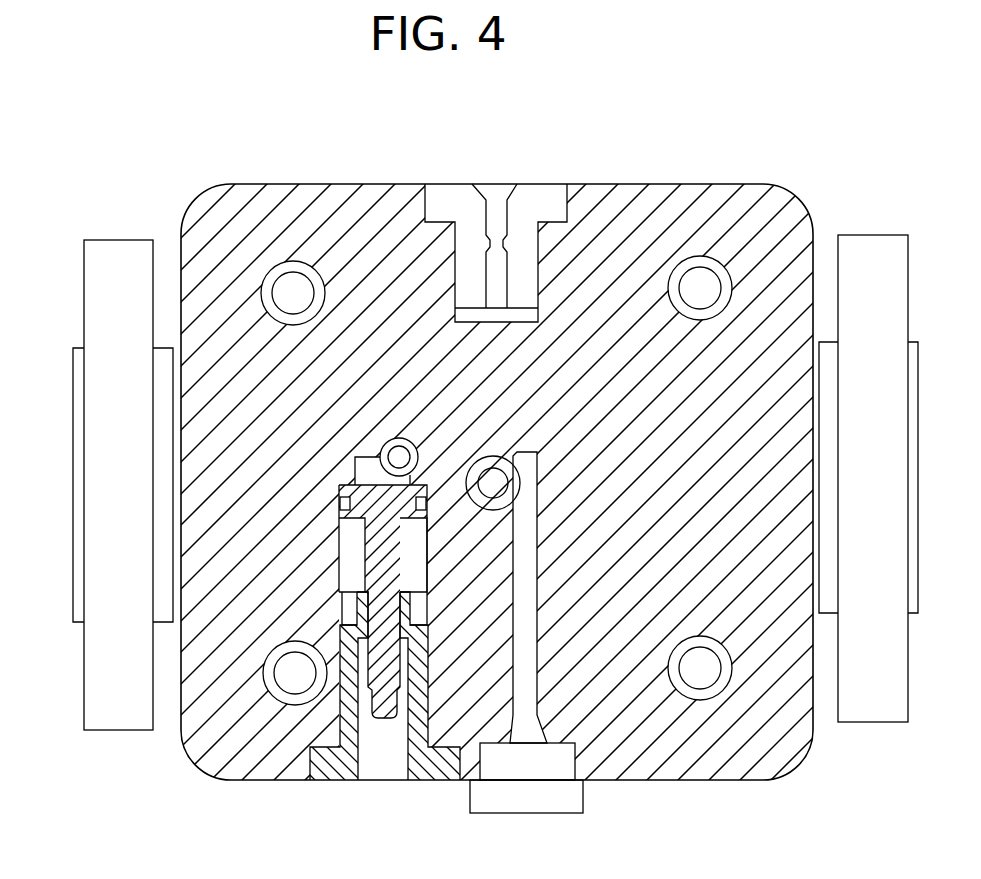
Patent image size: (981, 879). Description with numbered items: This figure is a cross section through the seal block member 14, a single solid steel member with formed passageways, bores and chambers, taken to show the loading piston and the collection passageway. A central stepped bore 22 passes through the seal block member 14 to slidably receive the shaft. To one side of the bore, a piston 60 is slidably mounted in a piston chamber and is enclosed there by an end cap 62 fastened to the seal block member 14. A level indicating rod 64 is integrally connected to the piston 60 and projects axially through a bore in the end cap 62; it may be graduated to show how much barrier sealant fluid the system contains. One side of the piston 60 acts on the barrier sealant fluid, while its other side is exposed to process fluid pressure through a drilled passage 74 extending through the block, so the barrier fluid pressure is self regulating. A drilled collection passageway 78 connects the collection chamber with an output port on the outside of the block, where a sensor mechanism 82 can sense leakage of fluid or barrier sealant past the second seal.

The seal block member 14 is at (317, 178).
The central stepped bore 22 is at (493, 483).
The piston 60 is at (355, 483).
The end cap 62 is at (341, 766).
The level indicating rod 64 is at (385, 653).
The drilled passage 74 is at (399, 457).
The drilled collection passageway 78 is at (530, 582).
The sensor mechanism 82 is at (505, 792).